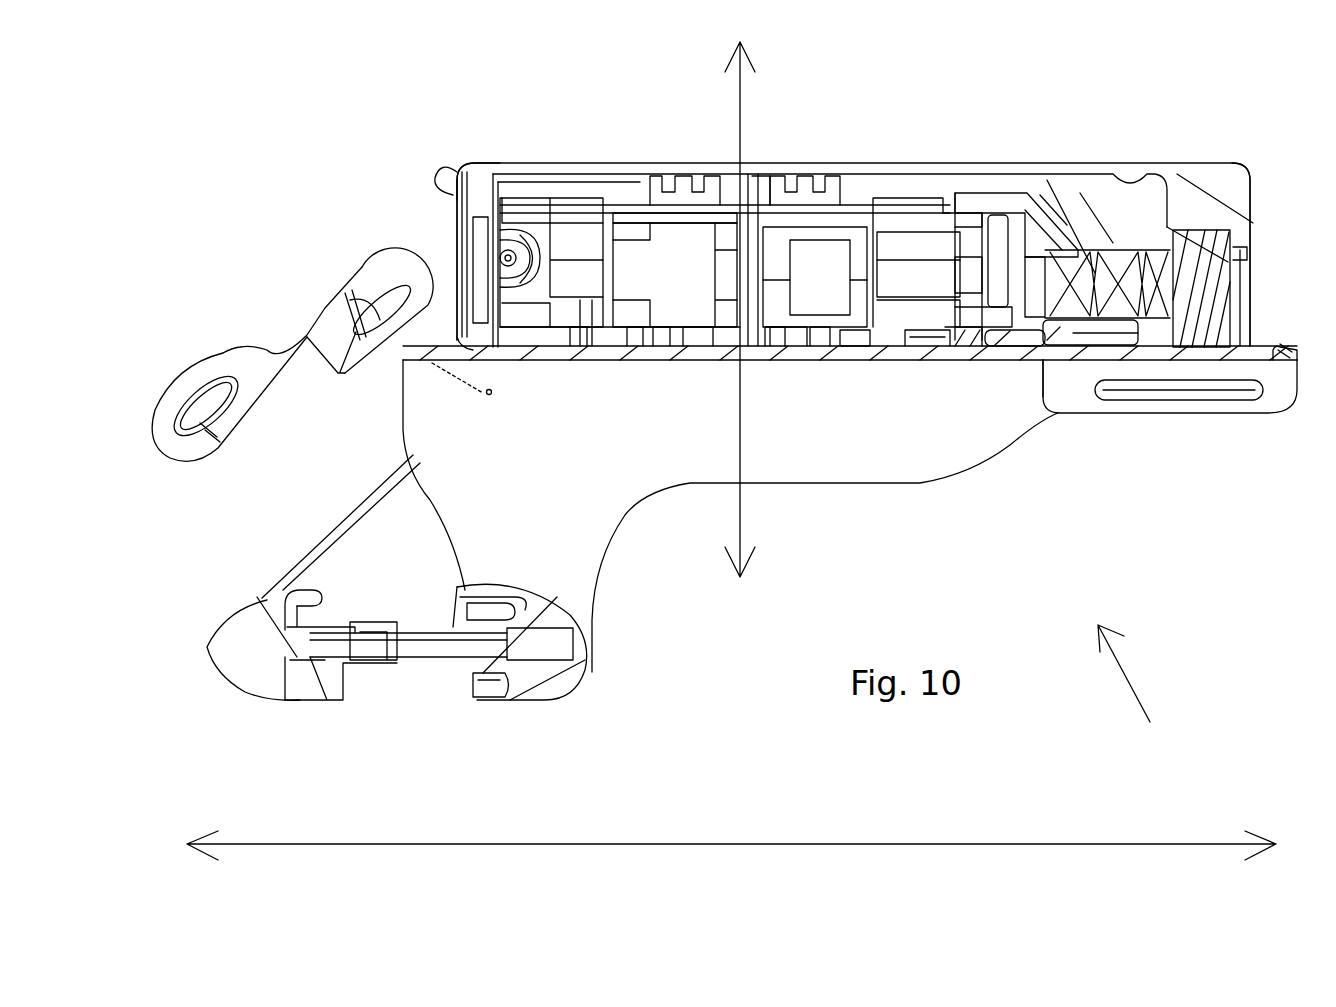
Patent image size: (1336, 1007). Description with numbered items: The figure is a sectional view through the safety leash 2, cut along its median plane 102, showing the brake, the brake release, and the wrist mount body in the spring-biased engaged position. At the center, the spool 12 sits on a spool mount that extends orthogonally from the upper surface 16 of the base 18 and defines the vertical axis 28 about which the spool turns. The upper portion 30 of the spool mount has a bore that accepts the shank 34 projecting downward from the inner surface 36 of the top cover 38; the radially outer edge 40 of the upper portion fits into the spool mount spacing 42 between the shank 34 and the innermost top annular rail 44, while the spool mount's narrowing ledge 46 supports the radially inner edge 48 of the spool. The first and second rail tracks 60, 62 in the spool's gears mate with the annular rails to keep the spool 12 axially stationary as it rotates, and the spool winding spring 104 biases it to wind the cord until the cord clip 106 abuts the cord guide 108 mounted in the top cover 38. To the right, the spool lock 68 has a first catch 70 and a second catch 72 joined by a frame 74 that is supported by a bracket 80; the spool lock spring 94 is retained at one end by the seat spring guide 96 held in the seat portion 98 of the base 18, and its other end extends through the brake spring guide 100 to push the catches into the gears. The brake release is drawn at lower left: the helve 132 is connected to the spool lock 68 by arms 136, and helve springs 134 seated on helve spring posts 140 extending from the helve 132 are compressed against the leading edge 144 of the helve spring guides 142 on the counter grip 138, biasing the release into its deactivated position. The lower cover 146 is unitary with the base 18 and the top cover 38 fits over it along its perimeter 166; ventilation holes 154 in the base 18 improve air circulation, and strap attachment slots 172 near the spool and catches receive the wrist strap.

The safety leash 2 is at (1130, 679).
The spool 12 is at (567, 348).
The upper surface 16 is at (888, 346).
The base 18 is at (960, 427).
The vertical axis 28 is at (742, 503).
The upper portion 30 is at (733, 280).
The shank 34 is at (747, 190).
The inner surface 36 is at (1143, 174).
The top cover 38 is at (1200, 160).
The radially outer edge 40 is at (713, 175).
The spool mount spacing 42 is at (752, 175).
The top annular rail 44 is at (630, 175).
The narrowing ledge 46 is at (758, 215).
The radially inner edge 48 is at (637, 215).
The first rail track 60 is at (575, 262).
The second rail track 62 is at (817, 348).
The spool lock 68 is at (1140, 350).
The first catch 70 is at (973, 167).
The second catch 72 is at (973, 348).
The frame 74 is at (1055, 193).
The second bracket 80 is at (1093, 174).
The spool lock spring 94 is at (1102, 255).
The seat spring guide 96 is at (1228, 250).
The seat portion 98 is at (1247, 313).
The brake spring guide 100 is at (1057, 417).
The median plane 102 is at (642, 844).
The spool winding spring 104 is at (780, 363).
The cord clip 106 is at (223, 350).
The cord guide 108 is at (543, 250).
The helve 132 is at (232, 610).
The helve springs 134 is at (330, 627).
The arms 136 is at (338, 530).
The counter grip 138 is at (592, 672).
The helve spring posts 140 is at (323, 703).
The helve spring guides 142 is at (430, 673).
The leading edge 144 is at (343, 670).
The lower cover 146 is at (455, 265).
The ventilation holes 154 is at (1275, 365).
The perimeter 166 is at (433, 178).
The strap attachment slots 172 is at (1207, 397).